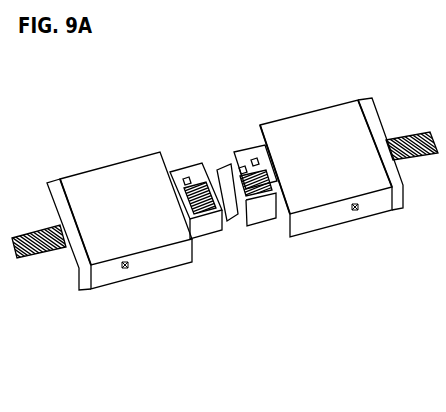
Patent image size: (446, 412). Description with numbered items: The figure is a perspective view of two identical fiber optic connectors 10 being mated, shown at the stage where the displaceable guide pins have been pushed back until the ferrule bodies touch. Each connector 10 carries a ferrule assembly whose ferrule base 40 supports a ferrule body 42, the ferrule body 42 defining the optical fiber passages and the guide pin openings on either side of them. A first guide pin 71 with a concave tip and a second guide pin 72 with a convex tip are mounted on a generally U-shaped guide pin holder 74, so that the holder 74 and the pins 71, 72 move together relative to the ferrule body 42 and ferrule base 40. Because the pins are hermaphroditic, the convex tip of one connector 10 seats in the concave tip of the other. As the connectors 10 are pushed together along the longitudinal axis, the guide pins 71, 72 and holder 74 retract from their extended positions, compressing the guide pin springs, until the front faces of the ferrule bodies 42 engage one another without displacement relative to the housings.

The fiber optic connector 10 is at (144, 312).
The ferrule base 40 is at (193, 165).
The ferrule body 42 is at (222, 167).
The first guide pin 71 is at (243, 168).
The second guide pin 72 is at (195, 188).
The guide pin holder 74 is at (187, 182).